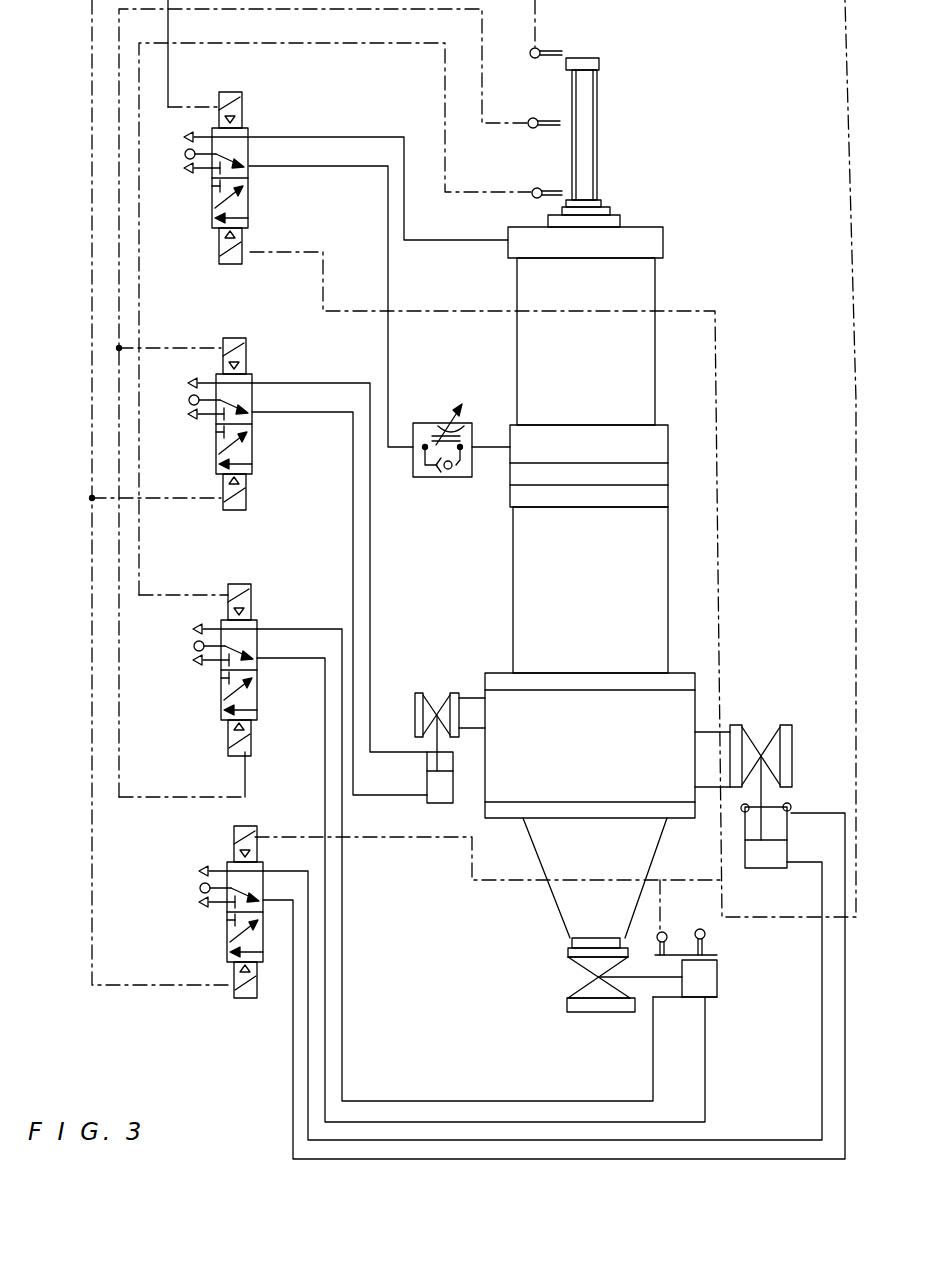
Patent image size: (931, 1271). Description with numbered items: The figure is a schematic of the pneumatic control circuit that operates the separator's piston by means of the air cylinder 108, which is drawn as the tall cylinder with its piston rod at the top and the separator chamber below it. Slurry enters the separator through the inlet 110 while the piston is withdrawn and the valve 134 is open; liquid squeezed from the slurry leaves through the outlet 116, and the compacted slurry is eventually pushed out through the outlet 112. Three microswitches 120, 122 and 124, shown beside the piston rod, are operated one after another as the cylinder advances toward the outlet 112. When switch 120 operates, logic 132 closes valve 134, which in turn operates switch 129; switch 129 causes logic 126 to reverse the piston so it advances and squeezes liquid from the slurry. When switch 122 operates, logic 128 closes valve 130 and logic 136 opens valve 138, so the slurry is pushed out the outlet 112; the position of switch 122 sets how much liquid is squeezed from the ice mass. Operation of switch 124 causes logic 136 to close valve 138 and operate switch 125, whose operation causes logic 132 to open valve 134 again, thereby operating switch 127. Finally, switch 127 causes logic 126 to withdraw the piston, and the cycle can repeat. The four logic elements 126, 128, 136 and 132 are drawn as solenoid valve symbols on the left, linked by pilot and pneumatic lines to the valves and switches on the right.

The air cylinder 108 is at (663, 277).
The inlet 110 is at (720, 733).
The outlet 112 is at (568, 952).
The outlet 116 is at (467, 720).
The microswitch 120 is at (556, 50).
The microswitch 122 is at (553, 103).
The microswitch 124 is at (548, 172).
The switch 125 is at (668, 922).
The logic 126 is at (249, 178).
The switch 127 is at (740, 812).
The logic 128 is at (247, 443).
The switch 129 is at (790, 805).
The valve 130 is at (432, 690).
The logic 132 is at (237, 928).
The valve 134 is at (817, 718).
The logic 136 is at (222, 698).
The valve 138 is at (587, 1000).